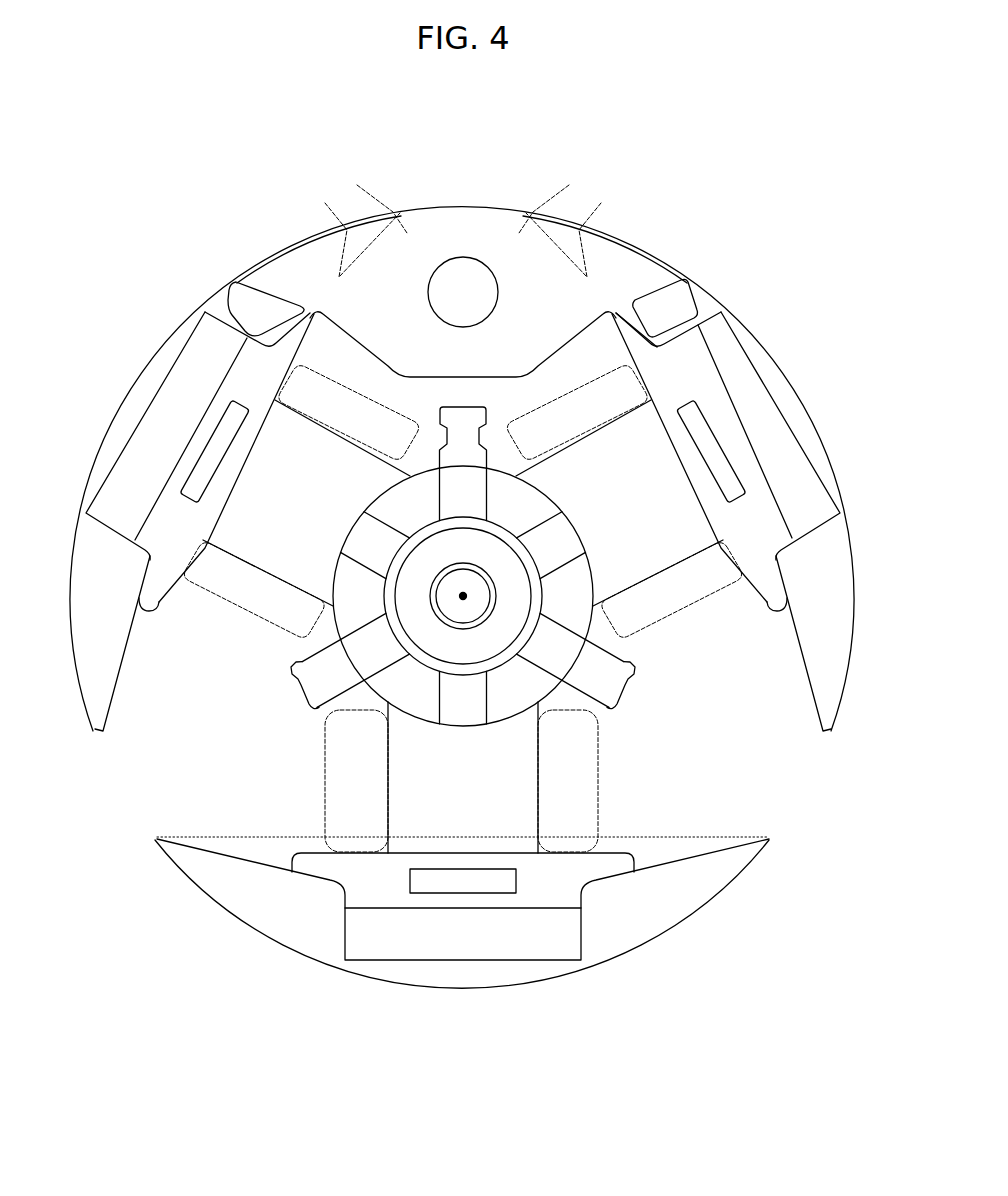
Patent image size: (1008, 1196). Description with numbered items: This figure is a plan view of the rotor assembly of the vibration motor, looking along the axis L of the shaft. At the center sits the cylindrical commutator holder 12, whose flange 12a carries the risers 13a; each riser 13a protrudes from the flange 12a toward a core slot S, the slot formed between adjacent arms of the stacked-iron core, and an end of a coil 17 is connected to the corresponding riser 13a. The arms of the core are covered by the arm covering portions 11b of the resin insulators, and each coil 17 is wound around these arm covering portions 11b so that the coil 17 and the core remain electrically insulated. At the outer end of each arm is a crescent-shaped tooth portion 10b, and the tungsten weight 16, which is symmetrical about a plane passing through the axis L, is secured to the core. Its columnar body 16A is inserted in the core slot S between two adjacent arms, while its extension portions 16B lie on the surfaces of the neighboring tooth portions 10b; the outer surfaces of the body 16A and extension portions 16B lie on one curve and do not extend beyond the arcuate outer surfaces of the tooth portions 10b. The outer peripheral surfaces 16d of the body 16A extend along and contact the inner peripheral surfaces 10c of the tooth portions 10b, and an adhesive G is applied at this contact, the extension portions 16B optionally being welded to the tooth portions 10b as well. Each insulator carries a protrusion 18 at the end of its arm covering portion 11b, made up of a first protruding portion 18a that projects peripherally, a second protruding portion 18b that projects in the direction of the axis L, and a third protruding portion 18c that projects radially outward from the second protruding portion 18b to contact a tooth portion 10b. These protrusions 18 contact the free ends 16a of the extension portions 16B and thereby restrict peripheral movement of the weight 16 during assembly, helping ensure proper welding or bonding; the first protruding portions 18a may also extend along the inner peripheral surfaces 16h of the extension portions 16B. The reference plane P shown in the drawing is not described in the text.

The tooth portion 10b is at (80, 627).
The inner peripheral surface 10c is at (466, 194).
The arm covering portion 11b is at (275, 560).
The commutator holder 12 is at (510, 567).
The flange 12a is at (537, 497).
The riser 13a is at (625, 668).
The weight 16 is at (485, 203).
The body 16A is at (452, 207).
The extension portion 16B is at (233, 288).
The free end 16a is at (232, 320).
The outer peripheral surface 16d is at (459, 227).
The inner peripheral surface 16h is at (660, 310).
The coil 17 is at (240, 627).
The protrusion 18 is at (540, 897).
The first protruding portion 18a is at (250, 302).
The second protruding portion 18b is at (217, 450).
The third protruding portion 18c is at (150, 417).
The adhesive G is at (305, 242).
The axis L is at (463, 600).
The reference plane P is at (698, 837).
The core slot S is at (248, 765).